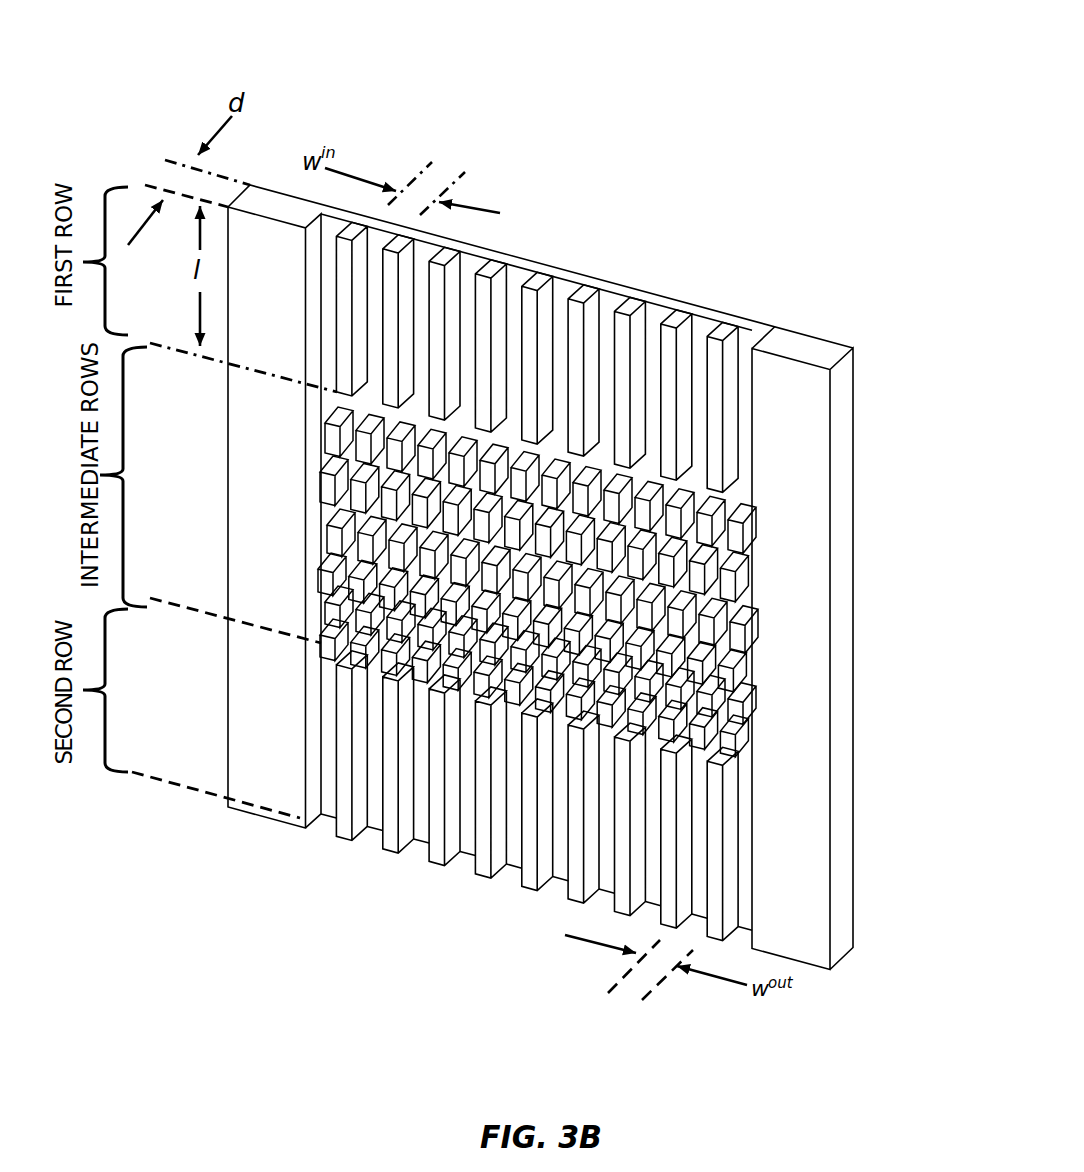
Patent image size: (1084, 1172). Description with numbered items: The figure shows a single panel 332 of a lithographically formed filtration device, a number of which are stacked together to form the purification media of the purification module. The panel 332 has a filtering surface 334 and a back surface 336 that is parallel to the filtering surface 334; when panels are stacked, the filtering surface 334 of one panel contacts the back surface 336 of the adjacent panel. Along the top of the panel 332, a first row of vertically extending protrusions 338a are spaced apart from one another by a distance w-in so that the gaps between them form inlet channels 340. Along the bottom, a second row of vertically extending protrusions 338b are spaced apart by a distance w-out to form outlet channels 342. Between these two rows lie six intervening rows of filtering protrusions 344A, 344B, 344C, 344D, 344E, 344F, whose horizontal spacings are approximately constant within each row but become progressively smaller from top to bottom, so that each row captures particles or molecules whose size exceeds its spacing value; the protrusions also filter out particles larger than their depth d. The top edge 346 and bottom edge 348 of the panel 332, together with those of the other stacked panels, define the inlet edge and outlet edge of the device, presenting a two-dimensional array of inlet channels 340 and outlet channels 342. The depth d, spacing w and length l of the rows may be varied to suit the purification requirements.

The panel 332 is at (192, 100).
The filtering surface 334 is at (369, 973).
The back surface 336 is at (764, 308).
The vertically extending protrusions of the first row 338a is at (585, 327).
The vertically extending protrusions of the second row 338b is at (447, 842).
The inlet channels 340 is at (515, 275).
The outlet channels 342 is at (373, 818).
The filtering protrusions of the first intervening row 344A is at (745, 522).
The filtering protrusions of the second intervening row 344B is at (748, 590).
The filtering protrusions of the third intervening row 344C is at (735, 648).
The filtering protrusions of the fourth intervening row 344D is at (730, 685).
The filtering protrusions of the fifth intervening row 344E is at (743, 728).
The filtering protrusions of the sixth intervening row 344F is at (730, 758).
The top edge 346 is at (810, 345).
The bottom edge 348 is at (263, 822).